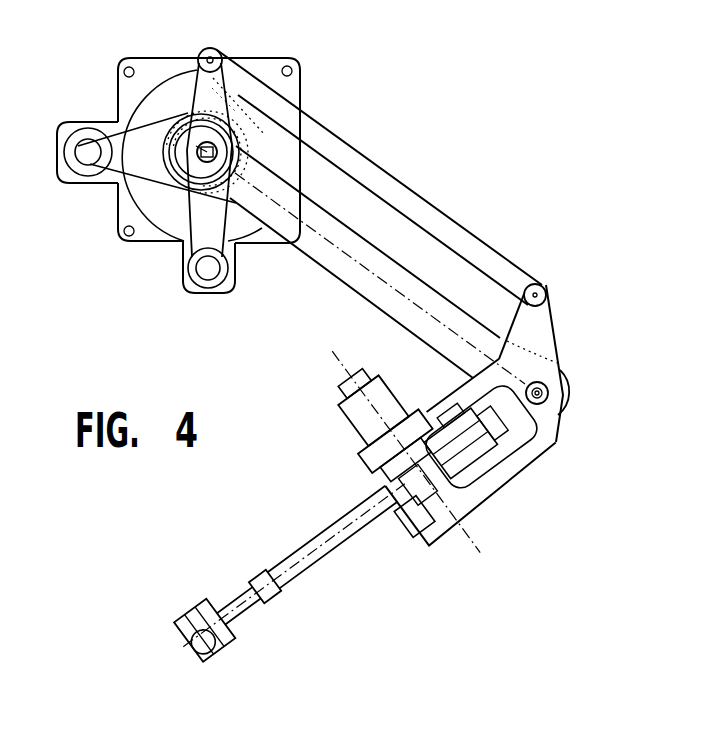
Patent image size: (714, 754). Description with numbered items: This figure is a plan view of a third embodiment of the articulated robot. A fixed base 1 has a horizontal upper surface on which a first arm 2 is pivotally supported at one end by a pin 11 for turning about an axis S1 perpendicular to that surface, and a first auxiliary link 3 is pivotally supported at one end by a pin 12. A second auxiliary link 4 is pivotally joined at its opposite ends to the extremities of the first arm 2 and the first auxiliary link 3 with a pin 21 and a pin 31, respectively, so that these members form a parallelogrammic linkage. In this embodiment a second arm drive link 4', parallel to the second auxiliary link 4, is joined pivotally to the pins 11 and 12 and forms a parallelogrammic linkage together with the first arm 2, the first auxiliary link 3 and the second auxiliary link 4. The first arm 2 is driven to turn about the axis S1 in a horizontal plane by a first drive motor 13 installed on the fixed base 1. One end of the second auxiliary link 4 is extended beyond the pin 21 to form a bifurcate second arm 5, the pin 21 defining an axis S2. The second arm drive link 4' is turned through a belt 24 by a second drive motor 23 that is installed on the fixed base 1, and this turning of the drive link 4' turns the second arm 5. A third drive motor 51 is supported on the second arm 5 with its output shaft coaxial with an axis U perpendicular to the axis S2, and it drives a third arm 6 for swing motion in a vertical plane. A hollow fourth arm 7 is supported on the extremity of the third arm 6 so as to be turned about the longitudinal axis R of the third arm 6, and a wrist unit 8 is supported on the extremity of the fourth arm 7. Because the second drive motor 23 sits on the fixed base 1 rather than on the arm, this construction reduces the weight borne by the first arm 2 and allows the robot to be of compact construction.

The fixed base 1 is at (302, 82).
The first arm 2 is at (347, 277).
The first auxiliary link 3 is at (384, 176).
The second auxiliary link 4 is at (546, 363).
The second arm drive link 4' is at (243, 57).
The second arm 5 is at (509, 475).
The third arm 6 is at (333, 533).
The fourth arm 7 is at (244, 617).
The wrist unit 8 is at (196, 608).
The pin 11 is at (196, 143).
The pin 12 is at (208, 58).
The first drive motor 13 is at (87, 129).
The pin 21 is at (548, 392).
The second drive motor 23 is at (206, 268).
The belt 24 is at (187, 212).
The pin 31 is at (538, 292).
The third drive motor 51 is at (366, 422).
The axis S1 is at (207, 152).
The axis S2 is at (545, 402).
The longitudinal axis R is at (320, 557).
The axis U is at (477, 540).